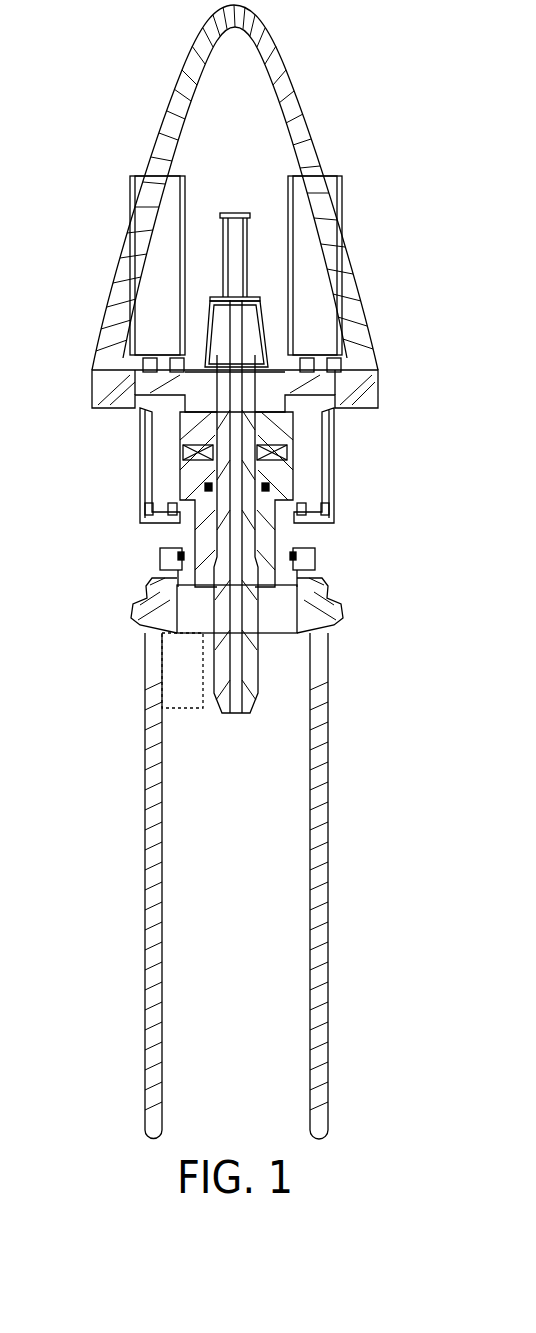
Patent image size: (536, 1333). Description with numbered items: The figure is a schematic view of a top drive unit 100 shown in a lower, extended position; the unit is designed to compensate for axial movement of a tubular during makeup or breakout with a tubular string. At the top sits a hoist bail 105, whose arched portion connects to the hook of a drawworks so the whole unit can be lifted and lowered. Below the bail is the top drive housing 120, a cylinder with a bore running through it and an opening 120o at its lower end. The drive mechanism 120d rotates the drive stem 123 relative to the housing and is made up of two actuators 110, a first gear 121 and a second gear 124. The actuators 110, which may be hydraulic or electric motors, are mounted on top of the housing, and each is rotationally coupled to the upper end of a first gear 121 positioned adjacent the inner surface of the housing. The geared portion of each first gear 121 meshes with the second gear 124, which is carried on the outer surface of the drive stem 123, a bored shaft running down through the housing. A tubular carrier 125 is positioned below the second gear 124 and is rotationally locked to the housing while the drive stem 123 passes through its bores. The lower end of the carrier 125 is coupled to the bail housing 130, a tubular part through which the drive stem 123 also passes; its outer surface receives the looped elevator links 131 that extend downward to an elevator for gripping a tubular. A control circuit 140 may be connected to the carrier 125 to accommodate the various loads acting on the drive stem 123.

The top drive unit 100 is at (399, 235).
The hoist bail 105 is at (305, 100).
The actuators 110 is at (180, 175).
The top drive housing 120 is at (137, 522).
The drive mechanism 120d is at (373, 367).
The opening 120o is at (293, 540).
The first gear 121 is at (150, 420).
The drive stem 123 is at (257, 677).
The second gear 124 is at (180, 445).
The carrier 125 is at (295, 463).
The bail housing 130 is at (330, 591).
The elevator links 131 is at (328, 798).
The control circuit 140 is at (162, 708).